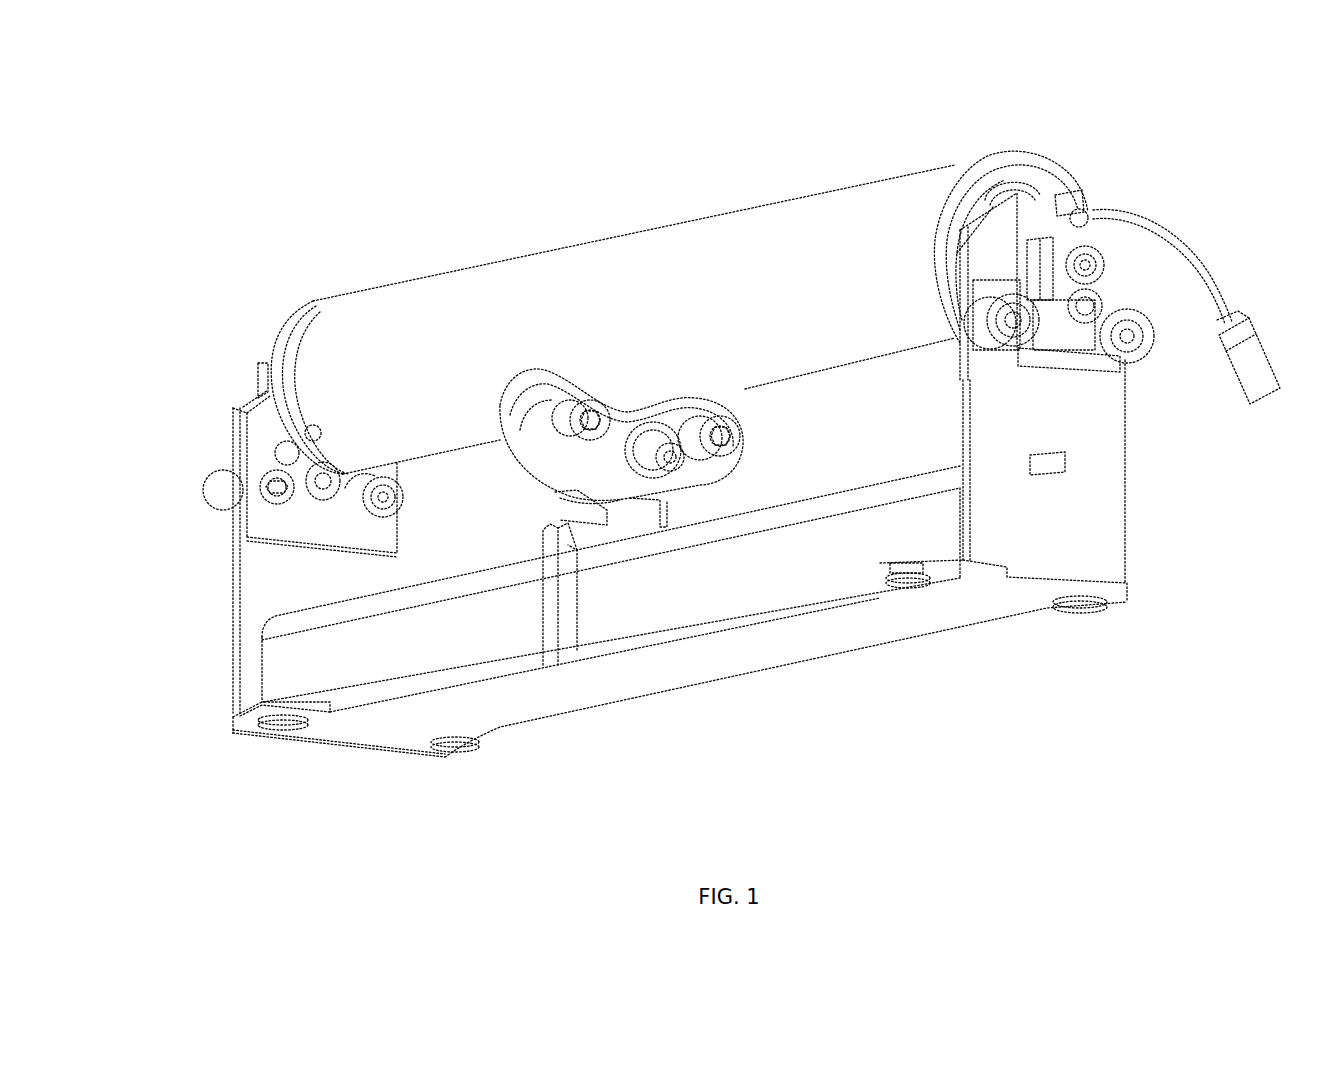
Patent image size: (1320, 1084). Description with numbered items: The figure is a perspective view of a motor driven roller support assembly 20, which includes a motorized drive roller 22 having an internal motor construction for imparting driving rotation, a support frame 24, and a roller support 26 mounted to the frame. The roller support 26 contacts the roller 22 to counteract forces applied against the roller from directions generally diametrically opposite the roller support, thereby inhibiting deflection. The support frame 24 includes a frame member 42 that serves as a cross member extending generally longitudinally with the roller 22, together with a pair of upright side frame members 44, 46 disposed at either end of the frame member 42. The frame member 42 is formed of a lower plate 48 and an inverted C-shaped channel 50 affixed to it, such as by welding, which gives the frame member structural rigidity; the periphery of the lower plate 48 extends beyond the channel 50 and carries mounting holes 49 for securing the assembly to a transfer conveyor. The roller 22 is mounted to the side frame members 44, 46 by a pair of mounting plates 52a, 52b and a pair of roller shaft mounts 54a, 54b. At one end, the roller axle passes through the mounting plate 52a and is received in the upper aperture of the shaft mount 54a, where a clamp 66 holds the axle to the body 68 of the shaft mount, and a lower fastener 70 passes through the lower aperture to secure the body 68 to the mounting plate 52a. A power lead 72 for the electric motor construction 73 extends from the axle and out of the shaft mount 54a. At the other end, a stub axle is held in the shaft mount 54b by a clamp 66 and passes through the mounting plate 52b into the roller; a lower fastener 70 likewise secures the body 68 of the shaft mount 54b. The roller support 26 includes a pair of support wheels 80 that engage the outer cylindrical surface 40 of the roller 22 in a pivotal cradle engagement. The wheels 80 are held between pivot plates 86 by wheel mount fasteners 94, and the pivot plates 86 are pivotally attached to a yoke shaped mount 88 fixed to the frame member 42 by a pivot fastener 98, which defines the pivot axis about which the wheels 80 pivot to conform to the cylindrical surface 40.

The motor driven roller support assembly 20 is at (312, 210).
The motorized drive roller 22 is at (313, 290).
The support frame 24 is at (190, 620).
The roller support 26 is at (771, 440).
The outer cylindrical surface 40 is at (745, 269).
The frame member 42 is at (800, 570).
The side frame member 44 is at (265, 578).
The side frame member 46 is at (1097, 517).
The lower plate 48 is at (658, 678).
The mounting holes 49 is at (282, 724).
The inverted C-shaped channel 50 is at (302, 664).
The mounting plate 52a is at (990, 243).
The mounting plate 52b is at (256, 415).
The roller shaft mount 54a is at (1093, 195).
The roller shaft mount 54b is at (262, 362).
The clamp 66 is at (1050, 250).
The body 68 is at (1053, 352).
The lower fastener 70 is at (1093, 296).
The power lead 72 is at (1193, 257).
The electric motor construction 73 is at (1010, 190).
The support wheels 80 is at (510, 405).
The pivot plates 86 is at (628, 420).
The yoke shaped mount 88 is at (568, 603).
The wheel mount fasteners 94 is at (592, 395).
The pivot fastener 98 is at (655, 462).